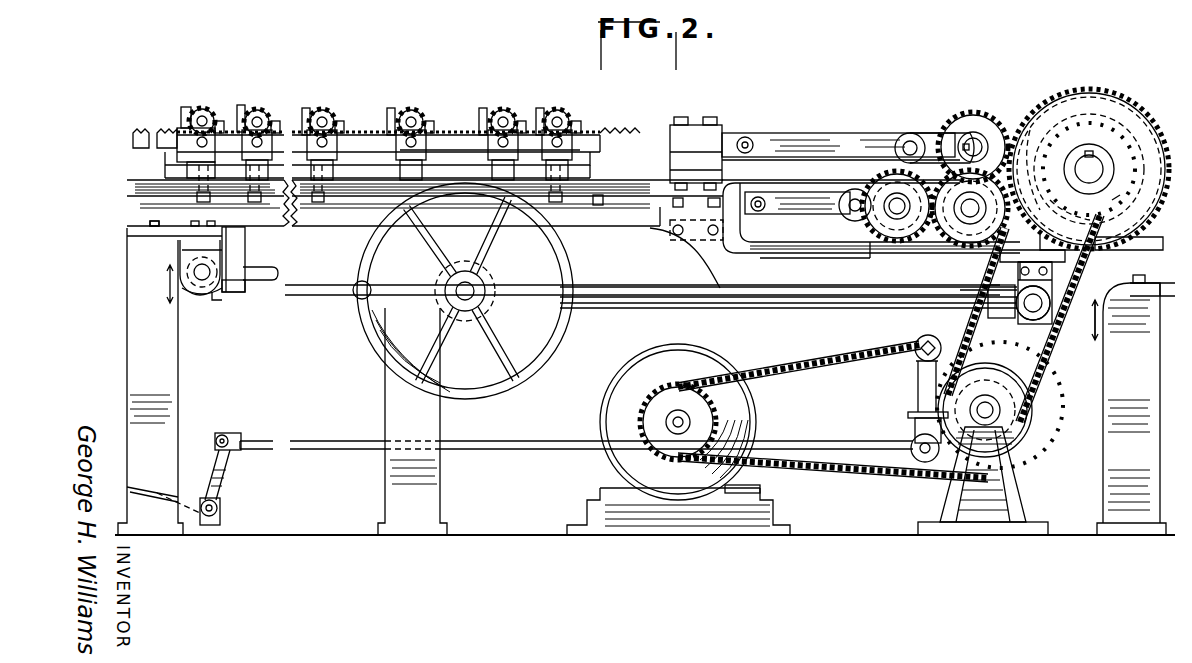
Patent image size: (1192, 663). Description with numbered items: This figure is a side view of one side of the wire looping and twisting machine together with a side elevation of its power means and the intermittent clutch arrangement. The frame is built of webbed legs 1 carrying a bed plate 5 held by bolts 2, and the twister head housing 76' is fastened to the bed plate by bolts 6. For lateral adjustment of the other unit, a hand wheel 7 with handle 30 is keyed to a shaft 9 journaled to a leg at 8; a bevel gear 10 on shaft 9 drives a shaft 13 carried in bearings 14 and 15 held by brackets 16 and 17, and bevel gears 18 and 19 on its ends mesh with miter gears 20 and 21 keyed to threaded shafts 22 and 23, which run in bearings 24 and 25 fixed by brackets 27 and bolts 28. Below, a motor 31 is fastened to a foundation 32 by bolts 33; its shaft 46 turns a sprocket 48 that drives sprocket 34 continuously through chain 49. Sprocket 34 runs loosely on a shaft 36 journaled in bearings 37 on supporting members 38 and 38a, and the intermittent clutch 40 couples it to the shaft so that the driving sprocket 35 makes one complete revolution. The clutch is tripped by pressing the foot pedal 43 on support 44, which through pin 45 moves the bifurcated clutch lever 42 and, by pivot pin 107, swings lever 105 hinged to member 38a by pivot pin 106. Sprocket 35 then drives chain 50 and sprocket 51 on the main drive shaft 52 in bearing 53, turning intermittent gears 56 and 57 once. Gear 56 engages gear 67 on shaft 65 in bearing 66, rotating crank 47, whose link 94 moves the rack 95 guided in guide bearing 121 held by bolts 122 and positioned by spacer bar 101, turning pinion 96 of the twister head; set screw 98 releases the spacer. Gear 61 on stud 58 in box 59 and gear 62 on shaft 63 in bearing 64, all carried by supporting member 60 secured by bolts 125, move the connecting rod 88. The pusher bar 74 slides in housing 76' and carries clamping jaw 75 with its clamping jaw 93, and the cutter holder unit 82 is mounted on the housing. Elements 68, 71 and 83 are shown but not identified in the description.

The webbed legs 1 is at (176, 381).
The bolts 2 is at (127, 228).
The bed plate 5 is at (835, 235).
The bolts 6 is at (318, 205).
The hand wheel 7 is at (536, 376).
The journal 8 is at (492, 279).
The shaft 9 is at (462, 312).
The bevel gear 10 is at (490, 302).
The shaft 13 is at (612, 287).
The bearing 14 is at (240, 293).
The bearing 15 is at (1020, 318).
The bracket 16 is at (245, 241).
The bracket 17 is at (988, 320).
The bevel gear 18 is at (222, 300).
The bevel gear 19 is at (988, 285).
The miter gear 20 is at (186, 272).
The miter gear 21 is at (1034, 321).
The threaded shaft 22 is at (195, 292).
The threaded shaft 23 is at (1134, 284).
The bearing 24 is at (222, 280).
The bearing 25 is at (1093, 334).
The brackets 27 is at (195, 258).
The bolts 28 is at (195, 218).
The handle 30 is at (357, 298).
The motor 31 is at (740, 403).
The foundation 32 is at (745, 522).
The bolts 33 is at (762, 490).
The sprocket 34 is at (1040, 412).
The driving sprocket 35 is at (1028, 376).
The shaft 36 is at (1002, 403).
The bearing 37 is at (983, 474).
The supporting member 38 is at (995, 522).
The bracket member 38a is at (915, 345).
The intermittent clutch 40 is at (1050, 428).
The clutch lever 42 is at (528, 450).
The foot pedal 43 is at (140, 487).
The support 44 is at (220, 510).
The pin 45 is at (230, 436).
The motor shaft 46 is at (666, 423).
The crank 47 is at (920, 138).
The sprocket 48 is at (655, 392).
The driving chain 49 is at (805, 372).
The chain 50 is at (1113, 152).
The sprocket 51 is at (1110, 205).
The main drive shaft 52 is at (1086, 146).
The bearing 53 is at (1134, 192).
The intermittent gear 56 is at (1150, 108).
The intermittent gear 57 is at (1018, 134).
The stud 58 is at (1075, 205).
The box 59 is at (950, 232).
The supporting member 60 is at (1162, 240).
The gear 61 is at (1062, 246).
The gear 62 is at (893, 170).
The shaft 63 is at (895, 210).
The bearing 64 is at (862, 202).
The shaft 65 is at (982, 140).
The bearing 66 is at (980, 128).
The gear 67 is at (965, 112).
The plate 68 is at (905, 260).
The disc 71 is at (1064, 152).
The pusher bar 74 is at (342, 166).
The clamping jaw 75 is at (586, 176).
The twister head housing 76' is at (209, 142).
The holder unit 82 is at (392, 110).
The block 83 is at (580, 124).
The connecting rod 88 is at (795, 214).
The clamping jaw 93 is at (432, 122).
The link 94 is at (790, 133).
The rack 95 is at (606, 132).
The pinion 96 is at (330, 112).
The set screw 98 is at (424, 147).
The spacer bar 101 is at (350, 134).
The lever 105 is at (915, 430).
The pivot pin 106 is at (918, 362).
The pivot pin 107 is at (911, 450).
The guide bearing 121 is at (707, 125).
The bolts 122 is at (673, 208).
The bolts 125 is at (862, 266).